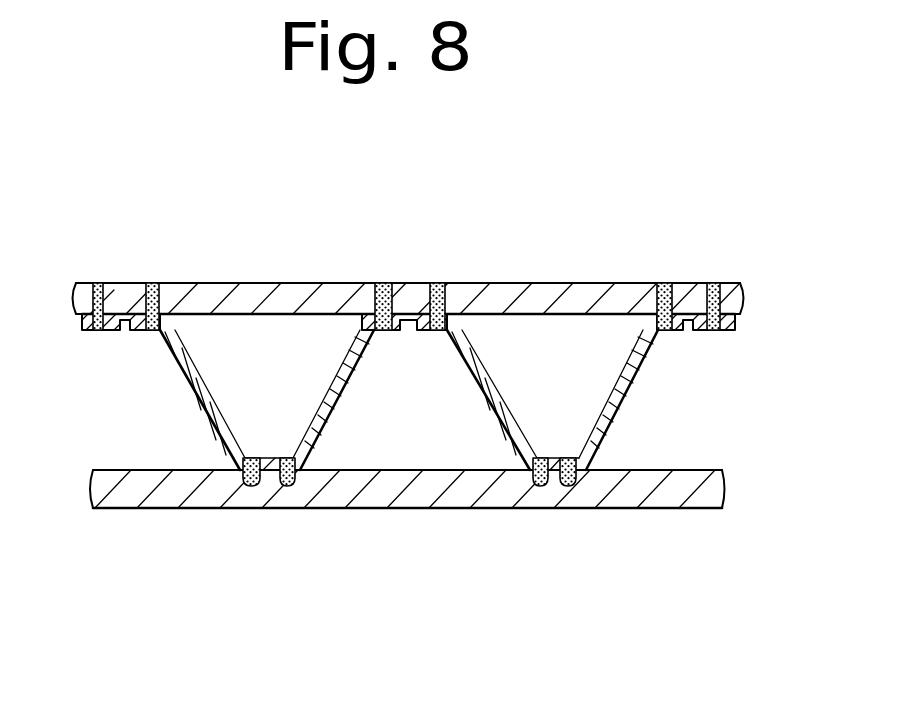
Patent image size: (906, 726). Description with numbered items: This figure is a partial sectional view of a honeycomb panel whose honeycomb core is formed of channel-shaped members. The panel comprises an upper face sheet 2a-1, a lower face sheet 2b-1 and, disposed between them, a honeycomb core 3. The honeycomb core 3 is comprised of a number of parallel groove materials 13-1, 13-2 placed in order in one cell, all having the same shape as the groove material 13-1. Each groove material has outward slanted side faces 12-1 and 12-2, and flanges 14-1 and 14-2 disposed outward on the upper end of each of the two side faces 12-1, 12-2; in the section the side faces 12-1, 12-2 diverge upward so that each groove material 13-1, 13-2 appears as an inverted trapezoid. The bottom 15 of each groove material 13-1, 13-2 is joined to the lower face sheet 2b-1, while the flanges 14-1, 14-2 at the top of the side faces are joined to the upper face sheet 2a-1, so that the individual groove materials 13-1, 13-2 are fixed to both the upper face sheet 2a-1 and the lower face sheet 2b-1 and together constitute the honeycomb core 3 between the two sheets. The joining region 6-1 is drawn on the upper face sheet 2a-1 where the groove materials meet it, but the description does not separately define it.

The upper face sheet 2a-1 is at (618, 292).
The lower face sheet 2b-1 is at (658, 498).
The honeycomb core 3 is at (643, 392).
The bonding portion 6-1 is at (180, 282).
The side face 12-1 is at (338, 408).
The side face 12-2 is at (202, 407).
The groove material 13-1 is at (467, 615).
The groove material 13-2 is at (490, 400).
The flange 14-1 is at (400, 330).
The flange 14-2 is at (136, 330).
The bottom 15 is at (270, 462).